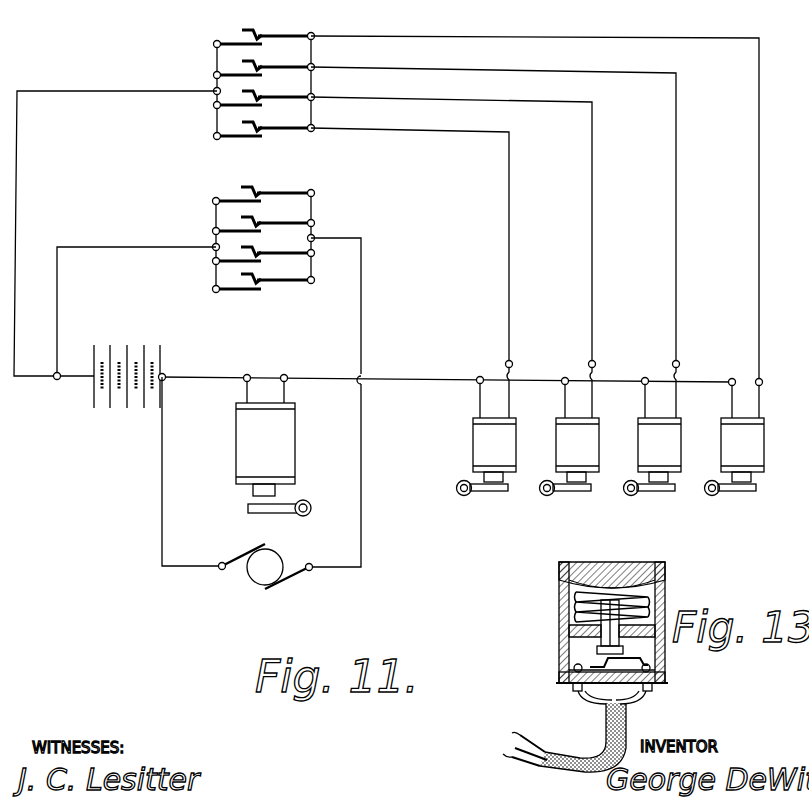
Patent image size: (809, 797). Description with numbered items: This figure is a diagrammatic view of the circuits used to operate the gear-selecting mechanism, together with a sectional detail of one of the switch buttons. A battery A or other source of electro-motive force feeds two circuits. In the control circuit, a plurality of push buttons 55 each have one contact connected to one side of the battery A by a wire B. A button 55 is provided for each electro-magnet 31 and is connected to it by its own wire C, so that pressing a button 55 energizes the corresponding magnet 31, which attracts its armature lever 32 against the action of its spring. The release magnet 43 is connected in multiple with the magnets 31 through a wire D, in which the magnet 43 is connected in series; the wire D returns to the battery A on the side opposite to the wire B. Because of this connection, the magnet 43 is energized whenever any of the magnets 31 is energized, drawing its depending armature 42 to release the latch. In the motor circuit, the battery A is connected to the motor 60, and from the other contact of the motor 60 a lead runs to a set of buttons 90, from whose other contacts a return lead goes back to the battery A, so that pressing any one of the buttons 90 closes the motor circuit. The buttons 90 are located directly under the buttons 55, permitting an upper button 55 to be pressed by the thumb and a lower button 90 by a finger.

In FIG. 11, the push button 55 is at (280, 38).
In FIG. 13, the push button 55 is at (562, 585).
In FIG. 11, the button 90 is at (275, 228).
In FIG. 11, the wire C is at (579, 234).
In FIG. 11, the wire B is at (17, 194).
In FIG. 11, the battery A is at (112, 348).
In FIG. 11, the wire D is at (198, 377).
In FIG. 11, the electro-magnet 43 is at (265, 436).
In FIG. 11, the armature 42 is at (278, 512).
In FIG. 11, the motor 60 is at (253, 580).
In FIG. 11, the electro-magnet 31 is at (618, 422).
In FIG. 11, the armature lever 32 is at (492, 492).